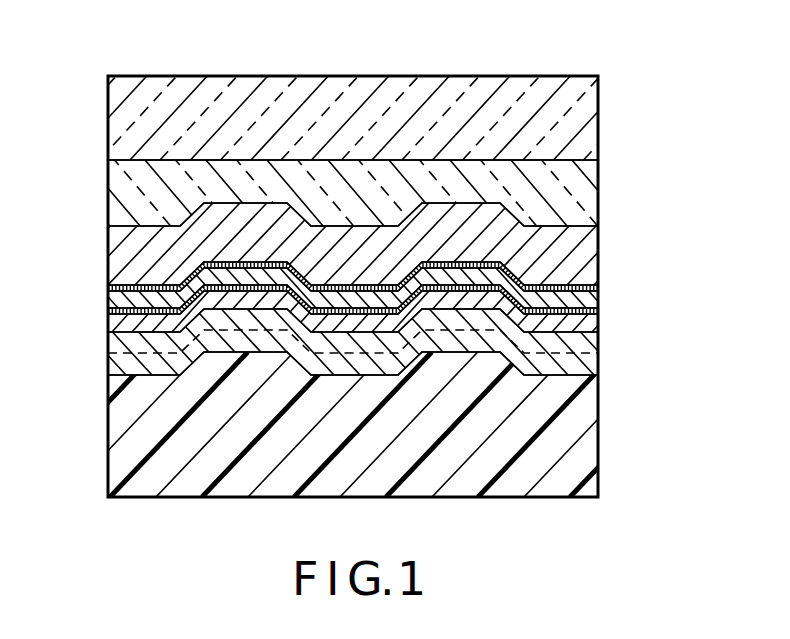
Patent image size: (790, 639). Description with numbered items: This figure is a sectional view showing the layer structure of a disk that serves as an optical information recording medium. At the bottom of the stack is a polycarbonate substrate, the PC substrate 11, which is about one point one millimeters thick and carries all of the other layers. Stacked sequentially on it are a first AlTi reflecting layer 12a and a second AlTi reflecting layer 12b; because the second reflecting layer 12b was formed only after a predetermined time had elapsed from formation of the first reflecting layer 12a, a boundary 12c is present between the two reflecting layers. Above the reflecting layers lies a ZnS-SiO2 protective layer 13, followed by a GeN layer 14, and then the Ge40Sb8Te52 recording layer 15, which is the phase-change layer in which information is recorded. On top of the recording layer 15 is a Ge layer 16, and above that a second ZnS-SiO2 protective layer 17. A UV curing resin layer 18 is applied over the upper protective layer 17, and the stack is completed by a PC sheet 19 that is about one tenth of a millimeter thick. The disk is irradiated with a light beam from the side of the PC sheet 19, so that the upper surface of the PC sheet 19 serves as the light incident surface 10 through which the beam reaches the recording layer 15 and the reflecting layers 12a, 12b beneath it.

The light incident surface 10 is at (393, 71).
The PC substrate 11 is at (585, 423).
The first AlTi reflecting layer 12a is at (598, 359).
The second AlTi reflecting layer 12b is at (598, 339).
The boundary 12c is at (108, 355).
The ZnS(80)—SiO2(20) protective layer 13 is at (590, 317).
The GeN layer 14 is at (108, 312).
The Ge40Sb8Te52 recording layer 15 is at (598, 295).
The Ge layer 16 is at (108, 289).
The ZnS(80)—SiO2(20) protective layer 17 is at (585, 252).
The UV curing resin layer 18 is at (585, 189).
The PC sheet 19 is at (598, 118).